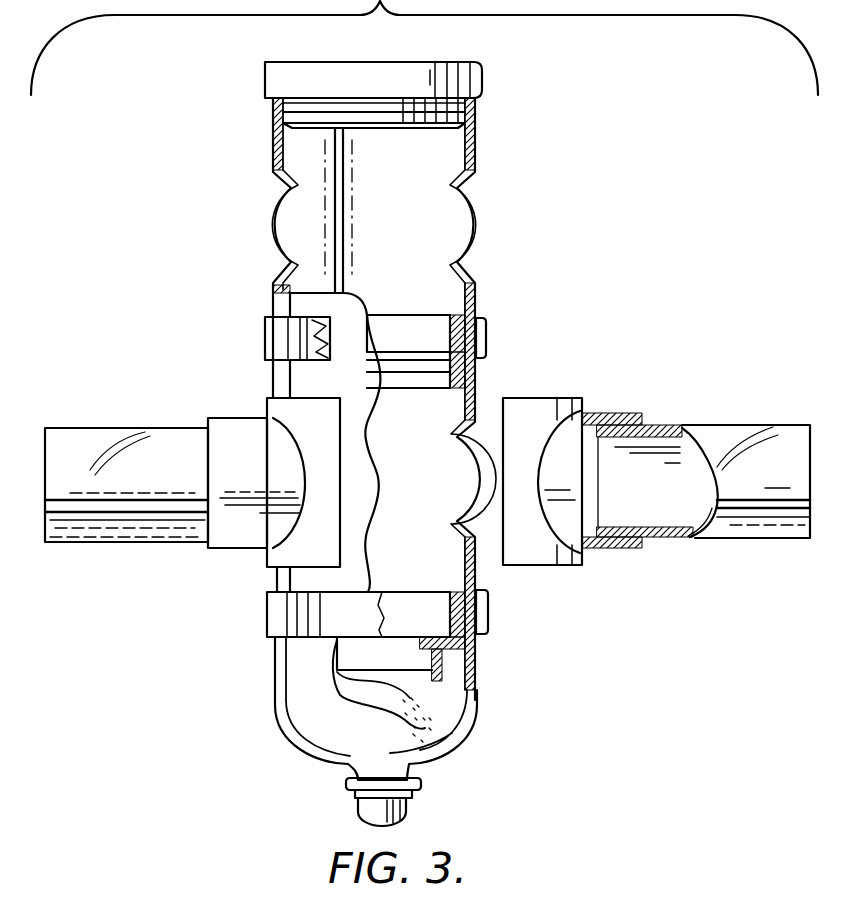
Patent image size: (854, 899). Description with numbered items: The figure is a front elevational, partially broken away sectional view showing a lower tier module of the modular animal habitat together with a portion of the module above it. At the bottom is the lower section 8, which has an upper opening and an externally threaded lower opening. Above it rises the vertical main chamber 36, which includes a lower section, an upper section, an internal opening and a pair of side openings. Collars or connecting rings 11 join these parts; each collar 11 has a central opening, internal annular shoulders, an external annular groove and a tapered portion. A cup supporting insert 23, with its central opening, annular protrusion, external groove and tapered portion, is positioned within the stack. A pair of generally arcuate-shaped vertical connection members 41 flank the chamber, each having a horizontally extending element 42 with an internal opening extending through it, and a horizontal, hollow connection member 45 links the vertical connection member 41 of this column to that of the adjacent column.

The lower section 8 is at (275, 684).
The collar or connecting ring 11 is at (267, 85).
The cup supporting insert 23 is at (430, 313).
The vertical main chamber 36 is at (476, 129).
The vertical connection member 41 is at (293, 428).
The horizontally extending element 42 is at (225, 550).
The horizontal hollow connection member 45 is at (722, 425).